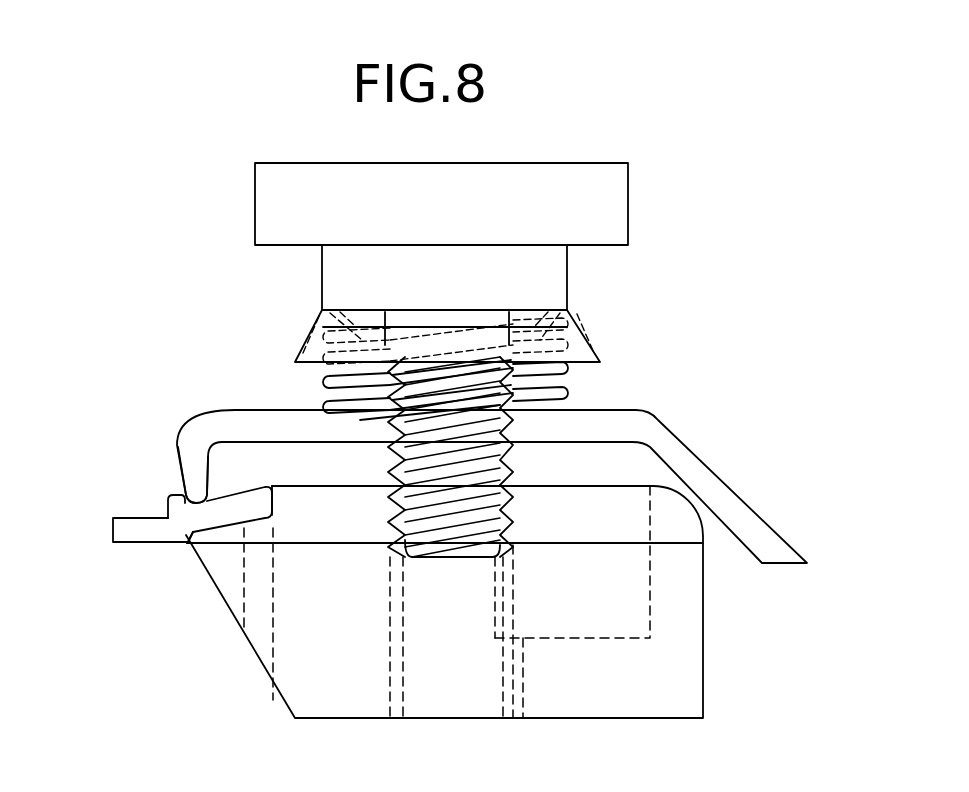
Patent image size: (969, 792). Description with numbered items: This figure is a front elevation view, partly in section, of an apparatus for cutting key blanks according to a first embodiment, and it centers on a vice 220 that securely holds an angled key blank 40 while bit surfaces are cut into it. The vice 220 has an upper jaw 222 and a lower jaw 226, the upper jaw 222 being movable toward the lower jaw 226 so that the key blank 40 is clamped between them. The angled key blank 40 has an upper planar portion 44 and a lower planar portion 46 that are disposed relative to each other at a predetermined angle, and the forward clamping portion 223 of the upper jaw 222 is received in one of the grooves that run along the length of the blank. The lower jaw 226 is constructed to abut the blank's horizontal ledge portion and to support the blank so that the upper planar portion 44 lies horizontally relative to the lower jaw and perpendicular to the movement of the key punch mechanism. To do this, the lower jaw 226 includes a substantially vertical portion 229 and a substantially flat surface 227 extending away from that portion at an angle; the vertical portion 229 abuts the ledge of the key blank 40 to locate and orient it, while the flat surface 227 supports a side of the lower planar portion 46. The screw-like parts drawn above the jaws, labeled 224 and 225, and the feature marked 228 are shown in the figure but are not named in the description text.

The vice 220 is at (537, 331).
The screw head 224 is at (447, 207).
The lock washer 225 is at (557, 356).
The upper jaw 222 is at (480, 466).
The forward clamping portion 223 is at (148, 436).
The lower jaw 226 is at (323, 652).
The flat surface 227 is at (143, 586).
The housing recess 228 is at (195, 587).
The vertical portion 229 is at (106, 564).
The angled key blank 40 is at (184, 522).
The upper planar portion 44 is at (133, 530).
The lower planar portion 46 is at (240, 497).